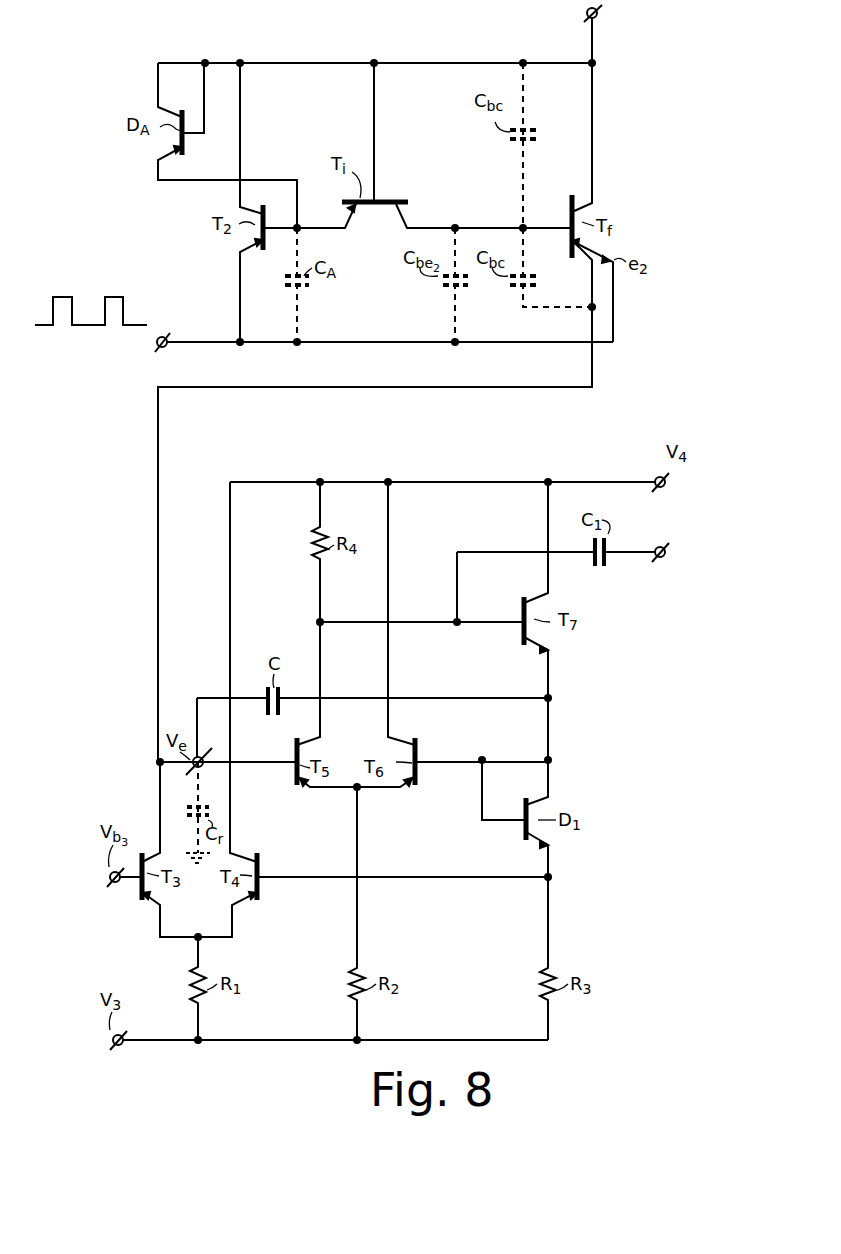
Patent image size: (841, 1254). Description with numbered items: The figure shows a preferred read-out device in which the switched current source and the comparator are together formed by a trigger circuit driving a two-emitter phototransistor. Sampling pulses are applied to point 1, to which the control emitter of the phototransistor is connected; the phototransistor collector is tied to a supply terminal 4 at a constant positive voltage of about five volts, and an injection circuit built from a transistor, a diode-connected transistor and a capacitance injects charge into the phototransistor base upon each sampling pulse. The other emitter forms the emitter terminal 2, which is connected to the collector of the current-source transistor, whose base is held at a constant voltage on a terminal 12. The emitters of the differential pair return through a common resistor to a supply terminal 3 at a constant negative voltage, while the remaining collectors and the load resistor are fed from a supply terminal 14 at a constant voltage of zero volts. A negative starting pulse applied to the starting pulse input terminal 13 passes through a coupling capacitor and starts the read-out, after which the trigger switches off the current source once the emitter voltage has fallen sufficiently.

The sampling pulse input point 1 is at (162, 328).
The emitter terminal 2 is at (202, 766).
The supply terminal 3 is at (133, 1030).
The supply terminal 4 is at (586, 12).
The base terminal 12 is at (118, 888).
The starting pulse input terminal 13 is at (658, 544).
The supply terminal 14 is at (656, 476).